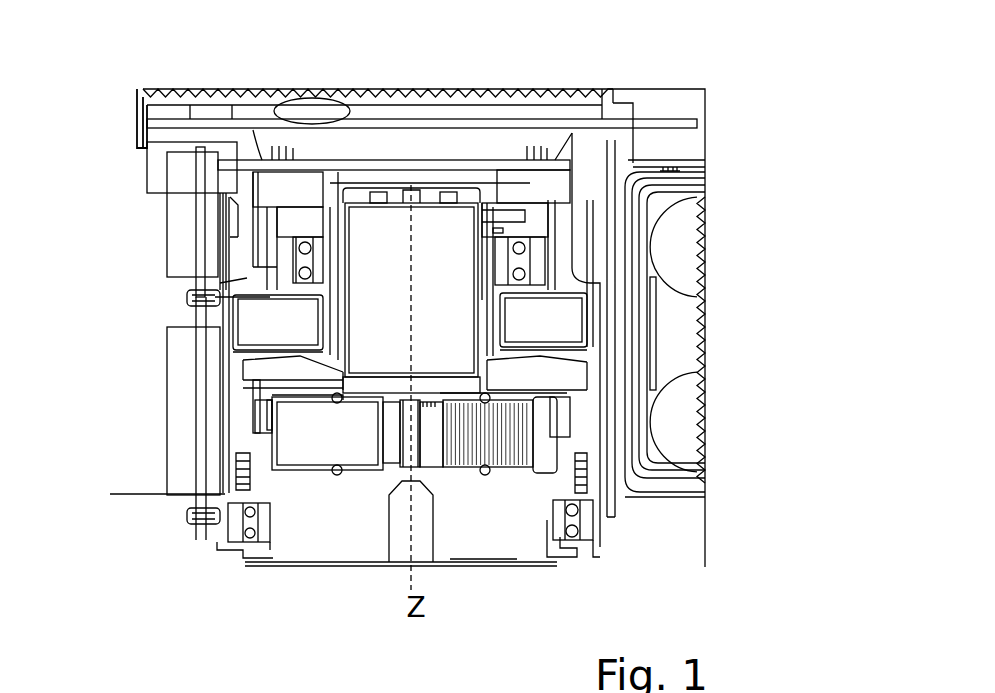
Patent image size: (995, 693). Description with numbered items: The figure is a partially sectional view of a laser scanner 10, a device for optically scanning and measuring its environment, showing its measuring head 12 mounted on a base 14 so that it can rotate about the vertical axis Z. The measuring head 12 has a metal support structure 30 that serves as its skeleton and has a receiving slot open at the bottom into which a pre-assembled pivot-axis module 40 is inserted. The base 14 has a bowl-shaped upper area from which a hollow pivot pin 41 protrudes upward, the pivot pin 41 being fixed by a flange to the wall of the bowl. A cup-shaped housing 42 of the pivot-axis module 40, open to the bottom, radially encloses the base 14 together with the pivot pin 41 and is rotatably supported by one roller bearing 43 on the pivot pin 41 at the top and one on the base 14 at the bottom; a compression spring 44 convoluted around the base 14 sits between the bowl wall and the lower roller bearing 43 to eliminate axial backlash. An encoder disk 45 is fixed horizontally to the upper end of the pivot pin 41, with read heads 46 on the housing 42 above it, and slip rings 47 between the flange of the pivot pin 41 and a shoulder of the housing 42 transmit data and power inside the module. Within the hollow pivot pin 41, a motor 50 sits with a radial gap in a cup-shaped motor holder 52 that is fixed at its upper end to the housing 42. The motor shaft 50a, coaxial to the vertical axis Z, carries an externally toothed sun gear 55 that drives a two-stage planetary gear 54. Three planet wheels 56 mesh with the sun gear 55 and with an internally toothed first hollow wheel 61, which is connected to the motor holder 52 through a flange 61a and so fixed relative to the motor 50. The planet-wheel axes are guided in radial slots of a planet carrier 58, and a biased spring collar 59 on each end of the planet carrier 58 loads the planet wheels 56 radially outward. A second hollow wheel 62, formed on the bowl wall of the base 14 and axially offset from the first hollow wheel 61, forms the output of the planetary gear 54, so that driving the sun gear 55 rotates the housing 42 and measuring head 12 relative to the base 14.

The laser scanner 10 is at (672, 100).
The measuring head 12 is at (131, 126).
The base 14 is at (542, 520).
The support structure 30 is at (186, 352).
The pivot-axis module 40 is at (413, 158).
The pivot pin 41 is at (333, 310).
The housing 42 is at (228, 305).
The roller bearing 43 is at (543, 323).
The compression spring 44 is at (582, 475).
The encoder disk 45 is at (495, 217).
The read heads 46 is at (520, 260).
The slip rings 47 is at (571, 268).
The motor 50 is at (430, 306).
The motor shaft 50a is at (413, 447).
The motor holder 52 is at (326, 287).
The planetary gear 54 is at (312, 484).
The sun gear 55 is at (392, 438).
The planet wheels 56 is at (462, 448).
The planet carrier 58 is at (518, 468).
The spring collar 59 is at (332, 400).
The first hollow wheel 61 is at (263, 427).
The flange 61a is at (303, 387).
The second hollow wheel 62 is at (263, 460).